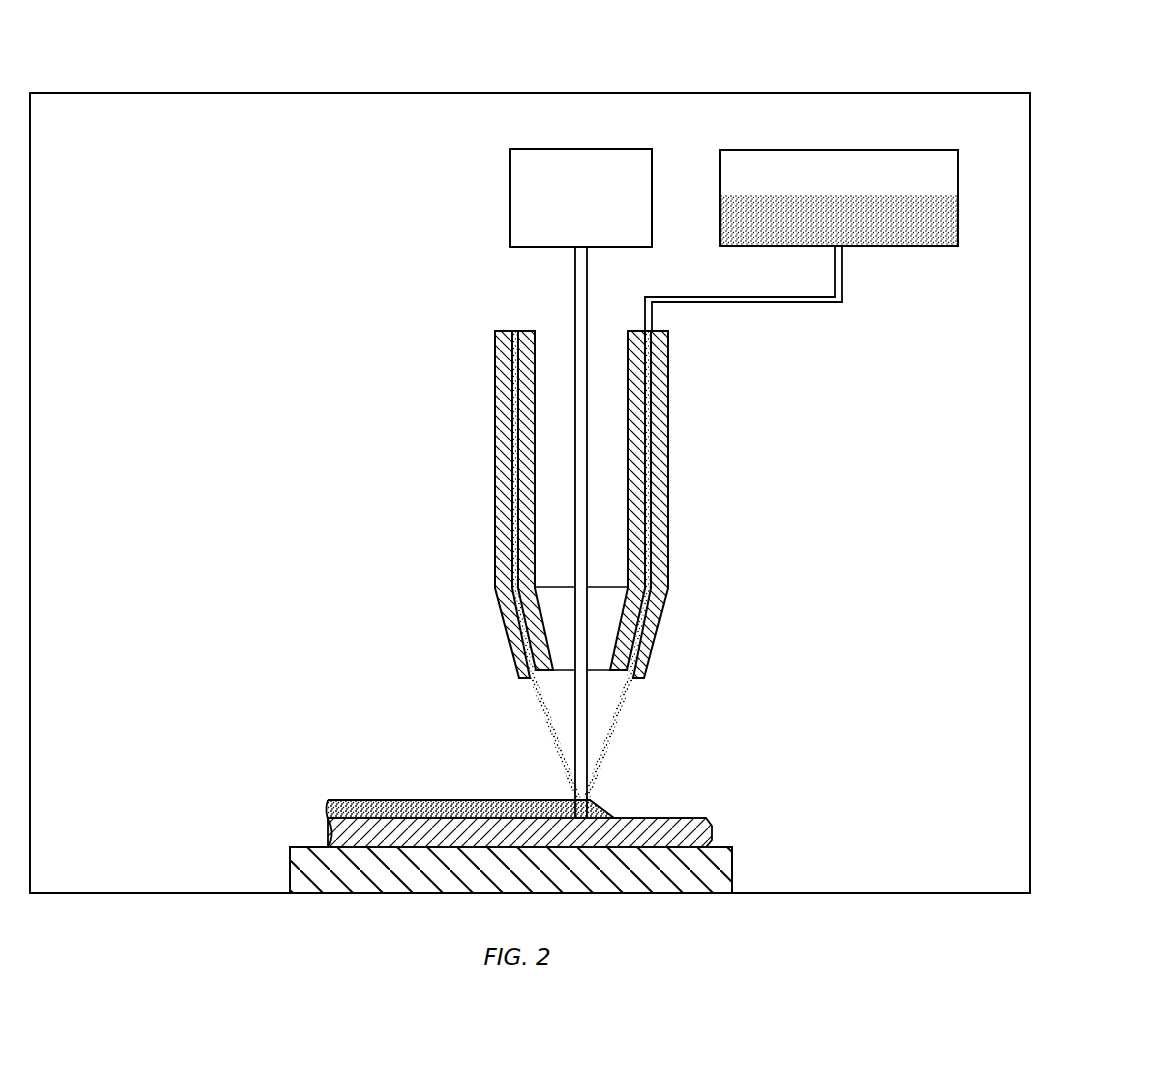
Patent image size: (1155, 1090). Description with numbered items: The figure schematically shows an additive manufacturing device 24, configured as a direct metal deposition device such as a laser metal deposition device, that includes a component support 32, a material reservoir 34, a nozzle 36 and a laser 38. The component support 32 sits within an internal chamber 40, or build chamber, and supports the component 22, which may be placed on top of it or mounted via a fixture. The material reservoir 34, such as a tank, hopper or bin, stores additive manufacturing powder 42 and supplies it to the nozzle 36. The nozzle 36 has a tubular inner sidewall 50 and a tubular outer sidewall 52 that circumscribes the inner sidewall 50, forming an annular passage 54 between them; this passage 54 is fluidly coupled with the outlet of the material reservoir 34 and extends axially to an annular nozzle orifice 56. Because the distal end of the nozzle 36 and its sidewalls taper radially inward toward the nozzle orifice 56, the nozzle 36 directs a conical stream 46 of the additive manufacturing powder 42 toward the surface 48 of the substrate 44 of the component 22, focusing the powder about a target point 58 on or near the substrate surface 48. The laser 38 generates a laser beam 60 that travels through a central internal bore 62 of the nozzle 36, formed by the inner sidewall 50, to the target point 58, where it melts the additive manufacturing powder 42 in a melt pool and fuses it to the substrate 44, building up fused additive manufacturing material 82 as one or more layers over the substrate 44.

The component 22 is at (502, 794).
The additive manufacturing device 24 is at (1070, 121).
The component support 32 is at (733, 875).
The material reservoir 34 is at (959, 173).
The nozzle 36 is at (599, 488).
The laser 38 is at (510, 206).
The internal chamber 40 is at (275, 462).
The additive manufacturing powder 42 is at (955, 218).
The substrate 44 is at (706, 838).
The stream 46 is at (620, 725).
The substrate surface 48 is at (696, 815).
The inner sidewall 50 is at (621, 540).
The outer sidewall 52 is at (668, 535).
The passage 54 is at (498, 378).
The nozzle orifice 56 is at (530, 678).
The target point 58 is at (581, 820).
The laser beam 60 is at (574, 725).
The internal bore 62 is at (555, 370).
The fused additive manufacturing material 82 is at (328, 818).